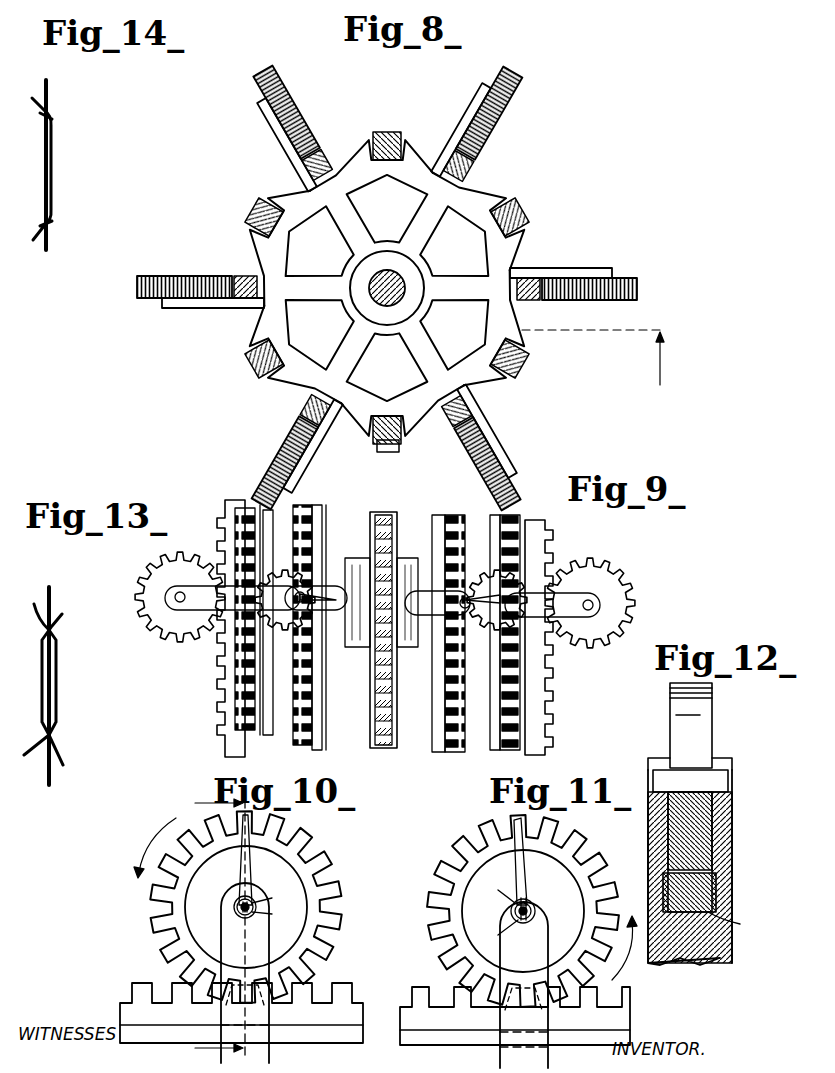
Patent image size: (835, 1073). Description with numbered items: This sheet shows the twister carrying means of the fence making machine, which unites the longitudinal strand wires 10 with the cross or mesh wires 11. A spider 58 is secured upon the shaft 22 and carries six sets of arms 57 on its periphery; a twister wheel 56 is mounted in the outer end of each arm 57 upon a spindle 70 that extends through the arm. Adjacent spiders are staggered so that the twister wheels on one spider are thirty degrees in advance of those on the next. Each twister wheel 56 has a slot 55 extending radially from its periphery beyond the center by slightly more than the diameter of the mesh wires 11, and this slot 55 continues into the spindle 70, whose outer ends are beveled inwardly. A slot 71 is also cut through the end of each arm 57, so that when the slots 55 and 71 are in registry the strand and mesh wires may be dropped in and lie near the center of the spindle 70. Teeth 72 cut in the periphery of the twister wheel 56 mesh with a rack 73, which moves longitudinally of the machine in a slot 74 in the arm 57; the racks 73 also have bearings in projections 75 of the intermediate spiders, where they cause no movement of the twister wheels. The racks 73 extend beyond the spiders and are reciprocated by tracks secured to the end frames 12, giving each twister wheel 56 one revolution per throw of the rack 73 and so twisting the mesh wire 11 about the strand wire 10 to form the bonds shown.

In FIG. 8, the strand wire 10 is at (591, 347).
In FIG. 10, the strand wire 10 is at (236, 909).
In FIG. 11, the strand wire 10 is at (533, 910).
In FIG. 13, the strand wire 10 is at (46, 784).
In FIG. 14, the strand wire 10 is at (43, 170).
In FIG. 10, the mesh wire 11 is at (254, 915).
In FIG. 11, the mesh wire 11 is at (518, 920).
In FIG. 13, the mesh wire 11 is at (58, 738).
In FIG. 14, the mesh wire 11 is at (56, 182).
In FIG. 10, the end frame 12 is at (188, 926).
In FIG. 8, the shaft 22 is at (402, 282).
In FIG. 9, the slot 55 is at (495, 608).
In FIG. 10, the slot 55 is at (250, 832).
In FIG. 11, the slot 55 is at (522, 838).
In FIG. 8, the twister wheel 56 is at (615, 282).
In FIG. 9, the twister wheel 56 is at (190, 570).
In FIG. 10, the twister wheel 56 is at (310, 888).
In FIG. 11, the twister wheel 56 is at (462, 887).
In FIG. 12, the twister wheel 56 is at (705, 730).
In FIG. 8, the arm 57 is at (220, 275).
In FIG. 9, the arm 57 is at (382, 601).
In FIG. 10, the arm 57 is at (245, 931).
In FIG. 11, the arm 57 is at (524, 985).
In FIG. 12, the arm 57 is at (725, 858).
In FIG. 8, the spider 58 is at (426, 368).
In FIG. 10, the spindle 70 is at (237, 902).
In FIG. 11, the spindle 70 is at (535, 915).
In FIG. 12, the spindle 70 is at (718, 791).
In FIG. 10, the slot 71 is at (250, 903).
In FIG. 11, the slot 71 is at (530, 903).
In FIG. 9, the teeth 72 is at (160, 575).
In FIG. 10, the teeth 72 is at (152, 897).
In FIG. 11, the teeth 72 is at (575, 847).
In FIG. 8, the rack 73 is at (390, 146).
In FIG. 9, the rack 73 is at (315, 722).
In FIG. 10, the rack 73 is at (343, 1000).
In FIG. 11, the rack 73 is at (430, 1023).
In FIG. 12, the rack 73 is at (693, 892).
In FIG. 8, the slot 74 is at (497, 360).
In FIG. 12, the slot 74 is at (737, 923).
In FIG. 8, the projection 75 is at (505, 205).